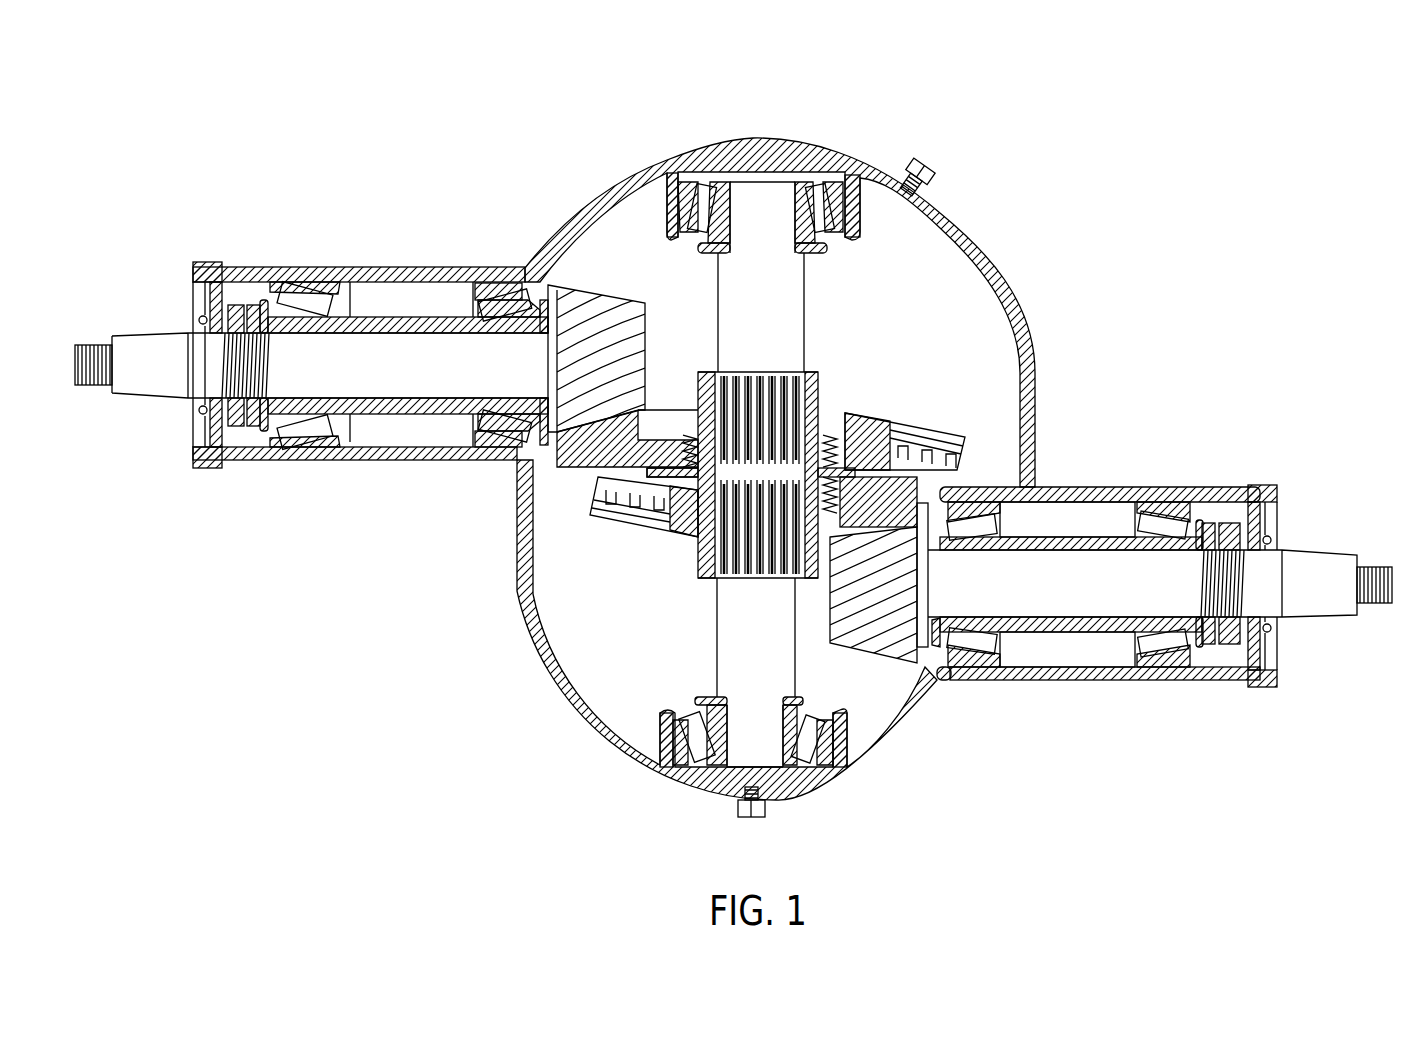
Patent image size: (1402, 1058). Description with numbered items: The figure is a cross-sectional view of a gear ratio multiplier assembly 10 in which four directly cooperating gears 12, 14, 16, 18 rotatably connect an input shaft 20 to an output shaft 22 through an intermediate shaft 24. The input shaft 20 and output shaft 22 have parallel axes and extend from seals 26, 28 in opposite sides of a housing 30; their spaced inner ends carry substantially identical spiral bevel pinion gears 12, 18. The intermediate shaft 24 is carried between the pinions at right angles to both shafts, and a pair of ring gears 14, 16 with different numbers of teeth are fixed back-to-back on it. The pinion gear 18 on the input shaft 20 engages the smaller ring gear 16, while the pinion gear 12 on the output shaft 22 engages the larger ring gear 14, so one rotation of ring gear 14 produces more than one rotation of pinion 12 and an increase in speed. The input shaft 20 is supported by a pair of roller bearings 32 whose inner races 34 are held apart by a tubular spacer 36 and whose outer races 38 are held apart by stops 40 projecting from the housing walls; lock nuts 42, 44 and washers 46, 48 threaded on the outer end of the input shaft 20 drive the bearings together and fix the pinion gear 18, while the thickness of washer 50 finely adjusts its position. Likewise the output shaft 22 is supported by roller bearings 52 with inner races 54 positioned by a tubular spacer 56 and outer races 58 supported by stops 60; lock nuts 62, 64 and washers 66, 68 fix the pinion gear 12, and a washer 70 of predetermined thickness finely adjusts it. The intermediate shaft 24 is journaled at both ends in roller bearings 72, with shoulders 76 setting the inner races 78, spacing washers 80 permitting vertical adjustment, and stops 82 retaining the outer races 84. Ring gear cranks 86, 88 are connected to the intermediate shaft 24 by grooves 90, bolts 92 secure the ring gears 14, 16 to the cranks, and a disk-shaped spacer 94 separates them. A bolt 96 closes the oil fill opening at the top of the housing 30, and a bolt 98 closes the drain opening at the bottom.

The gear ratio multiplier assembly 10 is at (552, 160).
The pinion gear 12 is at (604, 302).
The ring gear 14 is at (880, 418).
The ring gear 16 is at (635, 527).
The pinion gear 18 is at (868, 647).
The input shaft 20 is at (1272, 553).
The output shaft 22 is at (190, 340).
The intermediate shaft 24 is at (733, 314).
The seal 26 is at (1268, 650).
The seal 28 is at (200, 432).
The housing 30 is at (1033, 310).
The roller bearings 32 is at (1177, 520).
The inner races 34 is at (1140, 537).
The tubular spacer 36 is at (1072, 538).
The outer races 38 is at (1152, 510).
The stops 40 is at (1010, 506).
The lock nut 42 is at (1210, 523).
The lock nut 44 is at (1232, 523).
The washer 46 is at (1203, 646).
The washer 48 is at (1226, 646).
The washer 50 is at (930, 655).
The roller bearings 52 is at (300, 290).
The inner races 54 is at (370, 305).
The tubular spacer 56 is at (402, 318).
The outer races 58 is at (326, 285).
The stops 60 is at (490, 285).
The lock nut 62 is at (236, 305).
The lock nut 64 is at (254, 305).
The washer 66 is at (263, 430).
The washer 68 is at (265, 432).
The washer 70 is at (548, 442).
The roller bearings 72 is at (705, 190).
The shoulders 76 is at (720, 250).
The inner races 78 is at (730, 192).
The spacing washers 80 is at (822, 254).
The stops 82 is at (848, 165).
The outer races 84 is at (680, 216).
The ring gear crank 86 is at (812, 368).
The ring gear crank 88 is at (697, 565).
The grooves 90 is at (728, 577).
The bolts 92 is at (688, 436).
The disk-shaped spacer 94 is at (654, 462).
The bolt 96 is at (930, 182).
The bolt 98 is at (760, 818).